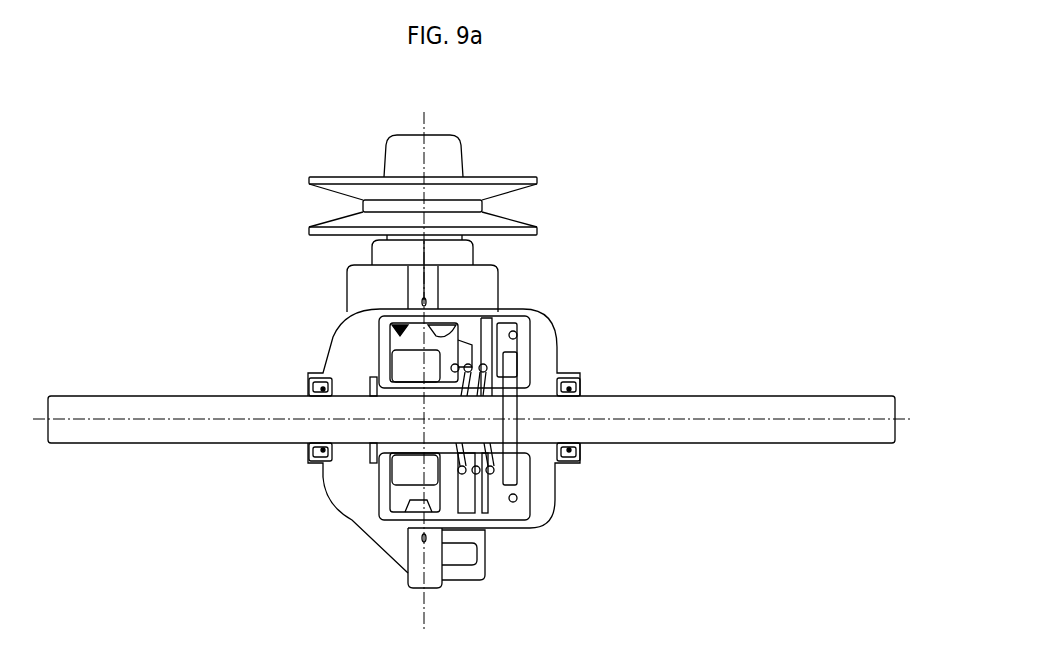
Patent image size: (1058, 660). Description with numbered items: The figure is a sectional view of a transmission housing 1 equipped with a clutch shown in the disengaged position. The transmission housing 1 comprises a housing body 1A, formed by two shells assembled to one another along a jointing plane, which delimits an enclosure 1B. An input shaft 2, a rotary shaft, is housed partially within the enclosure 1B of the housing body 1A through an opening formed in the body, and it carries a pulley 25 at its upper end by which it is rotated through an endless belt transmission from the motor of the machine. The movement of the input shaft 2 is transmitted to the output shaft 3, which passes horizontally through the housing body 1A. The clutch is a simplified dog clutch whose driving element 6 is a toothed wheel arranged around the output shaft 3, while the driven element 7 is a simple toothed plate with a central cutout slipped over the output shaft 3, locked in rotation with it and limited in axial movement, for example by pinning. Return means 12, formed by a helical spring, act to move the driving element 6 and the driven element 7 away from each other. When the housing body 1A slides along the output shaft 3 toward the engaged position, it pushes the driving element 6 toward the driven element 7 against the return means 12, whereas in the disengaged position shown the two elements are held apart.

The transmission housing 1 is at (471, 371).
The housing body 1A is at (555, 352).
The enclosure 1B is at (525, 506).
The input shaft 2 is at (462, 147).
The output shaft 3 is at (732, 395).
The driving element 6 is at (412, 343).
The driven element 7 is at (520, 335).
The return means 12 is at (486, 364).
The pulley 25 is at (537, 177).